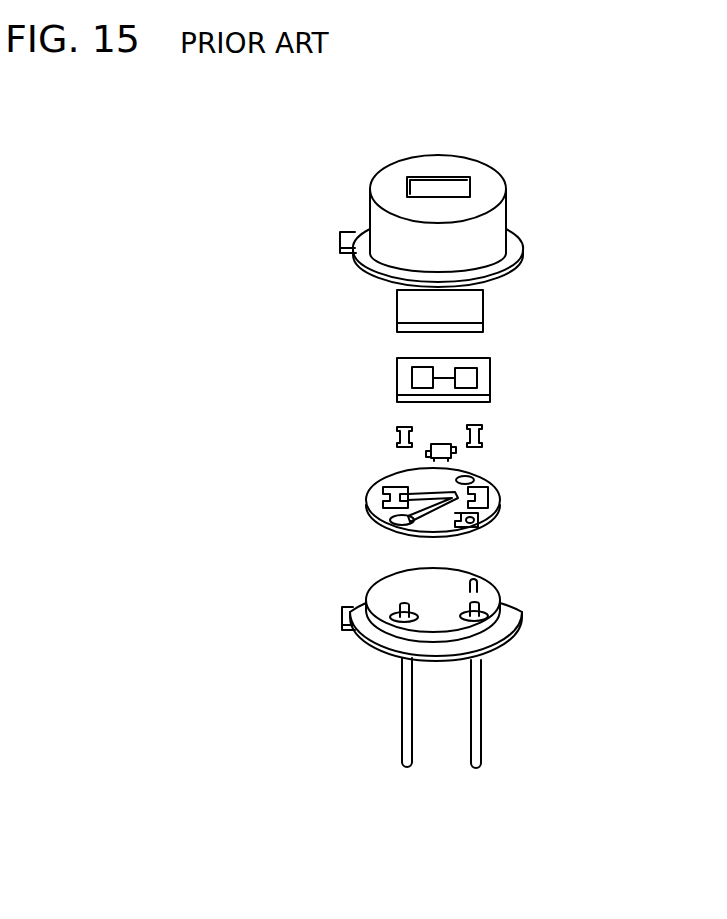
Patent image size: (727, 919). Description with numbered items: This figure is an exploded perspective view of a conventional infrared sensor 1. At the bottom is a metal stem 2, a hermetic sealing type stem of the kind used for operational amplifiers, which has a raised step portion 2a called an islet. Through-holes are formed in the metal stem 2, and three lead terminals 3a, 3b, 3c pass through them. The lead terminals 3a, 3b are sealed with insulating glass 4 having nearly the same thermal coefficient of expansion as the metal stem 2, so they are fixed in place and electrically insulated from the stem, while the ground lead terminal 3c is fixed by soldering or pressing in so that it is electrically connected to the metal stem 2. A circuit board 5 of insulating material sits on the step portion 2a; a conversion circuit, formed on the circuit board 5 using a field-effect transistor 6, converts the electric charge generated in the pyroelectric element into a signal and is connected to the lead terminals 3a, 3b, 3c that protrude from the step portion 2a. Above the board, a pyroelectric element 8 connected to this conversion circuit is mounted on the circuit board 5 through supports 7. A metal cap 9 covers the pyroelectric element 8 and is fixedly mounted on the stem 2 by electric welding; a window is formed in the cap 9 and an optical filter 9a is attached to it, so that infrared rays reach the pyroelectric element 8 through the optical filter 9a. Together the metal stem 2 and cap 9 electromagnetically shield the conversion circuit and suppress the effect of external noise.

The infrared sensor 1 is at (230, 117).
The metal stem 2 is at (488, 612).
The step portion 2a is at (487, 598).
The lead terminal 3a is at (400, 710).
The lead terminal 3b is at (482, 720).
The ground lead terminal 3c is at (473, 582).
The insulating glass 4 is at (397, 612).
The circuit board 5 is at (502, 507).
The field-effect transistor 6 is at (455, 453).
The supports 7 is at (397, 434).
The pyroelectric element 8 is at (483, 380).
The metal cap 9 is at (483, 228).
The optical filter 9a is at (473, 308).